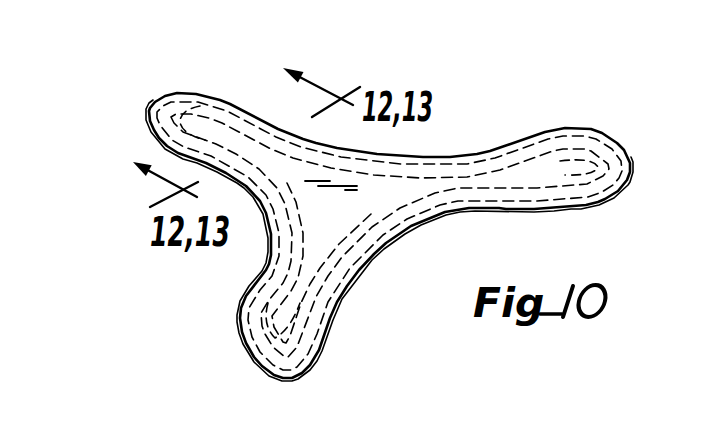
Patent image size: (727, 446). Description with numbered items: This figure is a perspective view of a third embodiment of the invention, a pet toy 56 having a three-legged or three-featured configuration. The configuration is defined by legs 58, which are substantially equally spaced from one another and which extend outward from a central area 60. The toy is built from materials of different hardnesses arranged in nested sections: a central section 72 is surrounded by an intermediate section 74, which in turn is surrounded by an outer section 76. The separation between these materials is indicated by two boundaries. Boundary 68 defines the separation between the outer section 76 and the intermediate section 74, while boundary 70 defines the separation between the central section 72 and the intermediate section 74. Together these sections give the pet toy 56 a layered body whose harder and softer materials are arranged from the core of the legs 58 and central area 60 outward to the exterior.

The pet toy 56 is at (152, 66).
The legs 58 is at (226, 46).
The central area 60 is at (340, 207).
The boundary 68 is at (440, 150).
The boundary 70 is at (498, 160).
The central section 72 is at (200, 125).
The intermediate section 74 is at (180, 123).
The outer section 76 is at (172, 142).